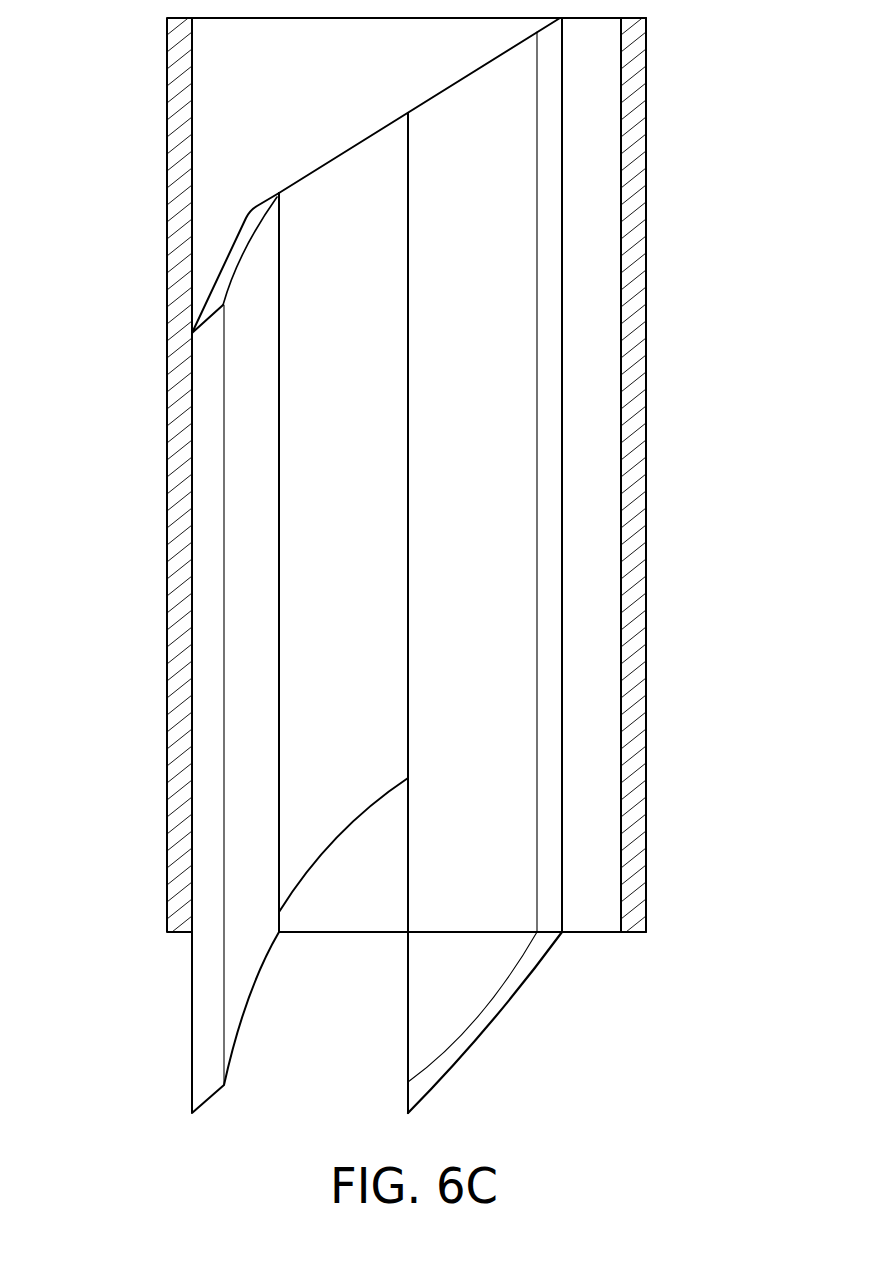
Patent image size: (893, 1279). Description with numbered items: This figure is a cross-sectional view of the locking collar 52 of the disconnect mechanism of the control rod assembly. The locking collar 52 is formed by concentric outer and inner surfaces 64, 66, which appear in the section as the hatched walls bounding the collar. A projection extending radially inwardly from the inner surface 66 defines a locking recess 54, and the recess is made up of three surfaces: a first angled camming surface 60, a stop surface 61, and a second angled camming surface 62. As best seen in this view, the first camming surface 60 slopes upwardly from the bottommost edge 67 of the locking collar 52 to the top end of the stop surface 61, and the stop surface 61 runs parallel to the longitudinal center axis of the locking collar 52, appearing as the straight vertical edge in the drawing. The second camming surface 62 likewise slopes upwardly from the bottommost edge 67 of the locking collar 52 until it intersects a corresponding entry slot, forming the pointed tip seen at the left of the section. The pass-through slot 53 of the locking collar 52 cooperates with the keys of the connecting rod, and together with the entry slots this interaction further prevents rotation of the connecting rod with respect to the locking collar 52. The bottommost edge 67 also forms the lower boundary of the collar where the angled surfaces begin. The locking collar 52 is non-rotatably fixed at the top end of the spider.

The locking collar 52 is at (124, 440).
The pass-through slot 53 is at (313, 690).
The locking recess 54 is at (356, 922).
The first angled camming surface 60 is at (357, 143).
The stop surface 61 is at (282, 373).
The second angled camming surface 62 is at (227, 262).
The outer surface 64 is at (646, 442).
The inner surface 66 is at (592, 822).
The bottommost edge 67 is at (547, 160).